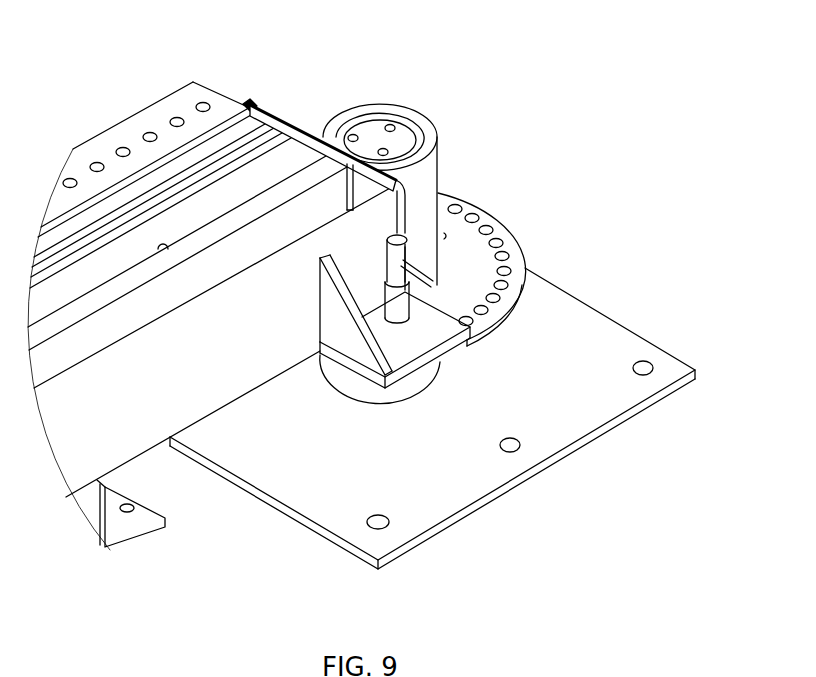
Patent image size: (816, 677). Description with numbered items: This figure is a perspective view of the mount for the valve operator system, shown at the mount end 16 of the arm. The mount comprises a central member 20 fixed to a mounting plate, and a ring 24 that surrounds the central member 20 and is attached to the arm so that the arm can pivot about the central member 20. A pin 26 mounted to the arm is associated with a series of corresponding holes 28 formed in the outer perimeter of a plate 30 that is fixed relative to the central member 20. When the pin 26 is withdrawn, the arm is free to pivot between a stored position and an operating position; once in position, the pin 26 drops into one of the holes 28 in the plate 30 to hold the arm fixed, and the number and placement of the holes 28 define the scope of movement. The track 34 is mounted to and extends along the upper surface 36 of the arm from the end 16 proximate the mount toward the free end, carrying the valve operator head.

The end of arm 16 is at (302, 120).
The central member 20 is at (373, 127).
The ring 24 is at (420, 113).
The pin 26 is at (380, 263).
The holes 28 is at (494, 221).
The plate 30 is at (517, 238).
The track 34 is at (160, 297).
The upper surface of arm 36 is at (113, 343).